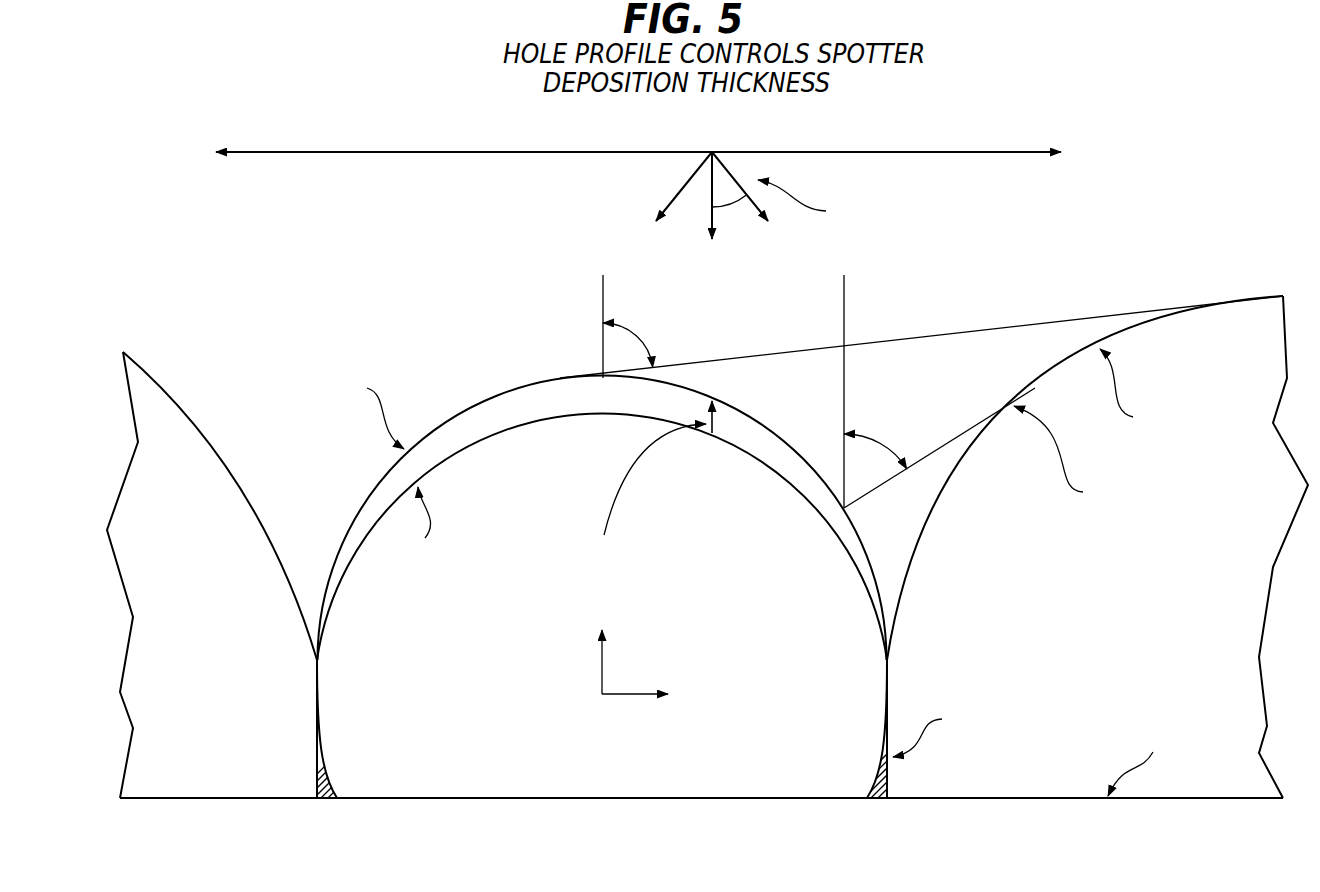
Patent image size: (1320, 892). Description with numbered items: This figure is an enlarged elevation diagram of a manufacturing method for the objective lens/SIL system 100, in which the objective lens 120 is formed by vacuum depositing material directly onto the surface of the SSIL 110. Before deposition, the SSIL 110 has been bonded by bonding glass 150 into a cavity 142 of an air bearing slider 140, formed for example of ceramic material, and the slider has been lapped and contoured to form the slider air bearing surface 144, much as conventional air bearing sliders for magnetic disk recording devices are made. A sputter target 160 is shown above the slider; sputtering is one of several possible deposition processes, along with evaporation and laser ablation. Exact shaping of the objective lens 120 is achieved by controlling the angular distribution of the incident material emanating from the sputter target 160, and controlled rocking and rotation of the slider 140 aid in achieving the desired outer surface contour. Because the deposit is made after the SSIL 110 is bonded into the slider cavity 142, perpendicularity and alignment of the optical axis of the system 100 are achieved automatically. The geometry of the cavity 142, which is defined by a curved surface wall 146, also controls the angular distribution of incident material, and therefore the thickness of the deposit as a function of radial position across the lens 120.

The objective lens/SIL (OSIL) system 100 is at (402, 827).
The SSIL 110 is at (666, 786).
The objective lens 120 is at (541, 391).
The air bearing slider 140 is at (1212, 787).
The cavity 142 is at (326, 329).
The slider air bearing surface (ABS) 144 is at (1012, 806).
The curved surface wall 146 is at (263, 525).
The bonding glass 150 is at (322, 801).
The sputter target 160 is at (533, 153).